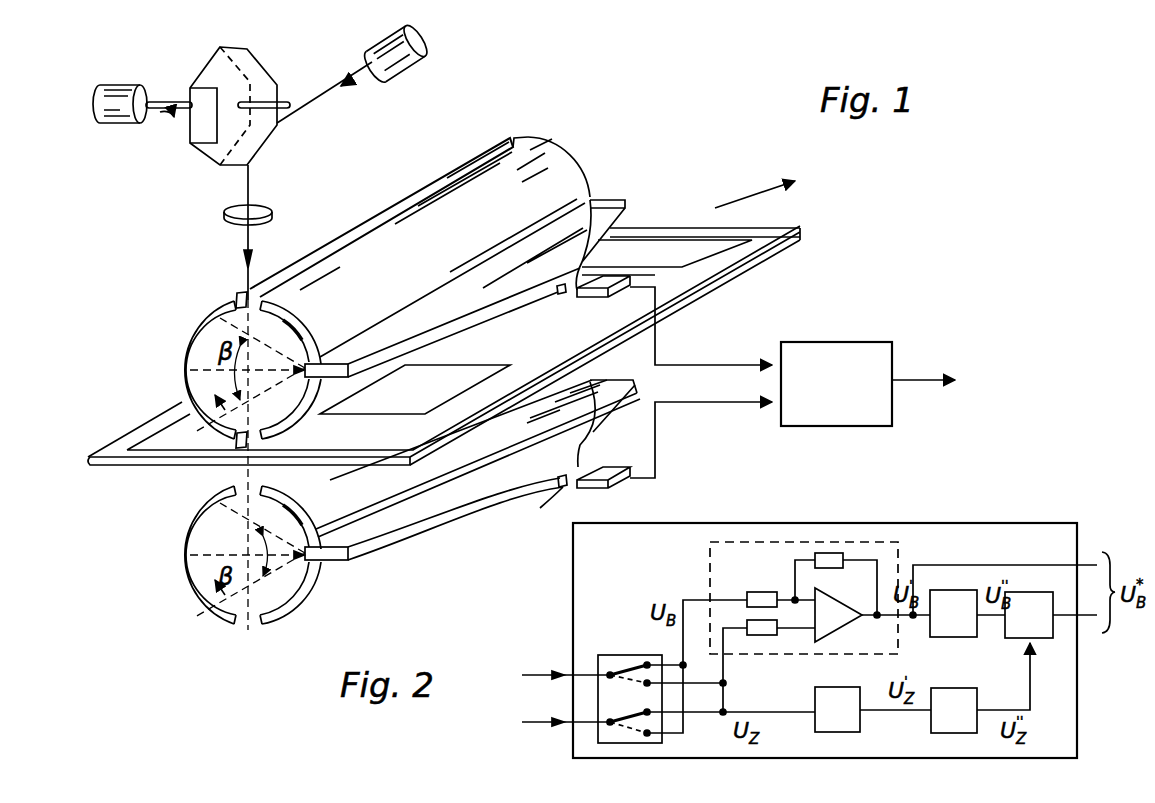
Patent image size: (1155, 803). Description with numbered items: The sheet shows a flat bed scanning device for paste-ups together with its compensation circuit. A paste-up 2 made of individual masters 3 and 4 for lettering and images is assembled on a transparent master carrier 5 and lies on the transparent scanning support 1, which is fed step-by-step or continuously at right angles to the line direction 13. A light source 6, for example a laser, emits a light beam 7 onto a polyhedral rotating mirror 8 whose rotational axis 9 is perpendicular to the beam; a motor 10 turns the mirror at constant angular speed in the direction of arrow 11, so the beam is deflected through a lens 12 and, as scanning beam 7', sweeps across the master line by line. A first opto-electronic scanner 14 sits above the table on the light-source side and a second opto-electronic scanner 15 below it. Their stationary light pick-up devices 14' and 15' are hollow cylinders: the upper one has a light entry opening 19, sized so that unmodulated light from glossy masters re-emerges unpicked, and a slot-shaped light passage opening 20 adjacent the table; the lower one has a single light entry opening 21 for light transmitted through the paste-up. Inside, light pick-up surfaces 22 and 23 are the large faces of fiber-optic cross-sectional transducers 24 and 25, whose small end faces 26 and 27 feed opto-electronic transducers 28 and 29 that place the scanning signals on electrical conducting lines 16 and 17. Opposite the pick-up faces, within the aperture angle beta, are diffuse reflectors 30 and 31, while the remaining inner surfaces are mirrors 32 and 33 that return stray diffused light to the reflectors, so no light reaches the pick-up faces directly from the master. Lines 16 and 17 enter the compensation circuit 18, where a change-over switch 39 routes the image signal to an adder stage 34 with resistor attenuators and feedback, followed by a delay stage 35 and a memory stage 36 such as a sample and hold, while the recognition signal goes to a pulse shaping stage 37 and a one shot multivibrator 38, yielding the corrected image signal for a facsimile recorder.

In FIG. 1, the scanning support 1 is at (108, 463).
In FIG. 1, the paste-up 2 is at (715, 255).
In FIG. 1, the individual master 3 is at (372, 412).
In FIG. 1, the individual master 4 is at (690, 262).
In FIG. 1, the transparent master carrier 5 is at (160, 445).
In FIG. 1, the light source 6 is at (408, 76).
In FIG. 1, the light beam 7 is at (324, 103).
In FIG. 1, the scanning beam 7' is at (224, 232).
In FIG. 1, the polyhedral rotating mirror 8 is at (250, 60).
In FIG. 1, the rotational axis 9 is at (284, 100).
In FIG. 1, the motor 10 is at (122, 122).
In FIG. 1, the arrow 11 is at (166, 98).
In FIG. 1, the lens 12 is at (266, 206).
In FIG. 1, the line direction 13 is at (740, 205).
In FIG. 1, the first opto-electronic scanner 14 is at (325, 383).
In FIG. 1, the upper light pick-up device 14' is at (175, 307).
In FIG. 1, the second opto-electronic scanner 15 is at (202, 561).
In FIG. 1, the lower light pick-up device 15' is at (179, 624).
In FIG. 1, the electrical conducting line 16 is at (710, 363).
In FIG. 2, the electrical conducting line 16 is at (535, 672).
In FIG. 1, the electrical conducting line 17 is at (712, 402).
In FIG. 2, the electrical conducting line 17 is at (538, 722).
In FIG. 1, the compensation circuit 18 is at (830, 342).
In FIG. 2, the compensation circuit 18 is at (965, 525).
In FIG. 1, the light entry opening 19 is at (234, 292).
In FIG. 1, the light passage opening 20 is at (235, 450).
In FIG. 1, the light entry opening 21 is at (230, 520).
In FIG. 1, the light pick-up surface 22 is at (288, 352).
In FIG. 1, the light pick-up surface 23 is at (288, 542).
In FIG. 1, the optical cross-sectional transducer 24 is at (612, 205).
In FIG. 1, the optical cross-sectional transducer 25 is at (590, 436).
In FIG. 1, the end face 26 is at (585, 300).
In FIG. 1, the end face 27 is at (553, 506).
In FIG. 1, the opto-electronic transducer 28 is at (668, 250).
In FIG. 1, the opto-electronic transducer 29 is at (595, 490).
In FIG. 1, the diffuse reflector 30 is at (184, 352).
In FIG. 1, the diffuse reflector 31 is at (184, 556).
In FIG. 1, the mirror 32 is at (322, 345).
In FIG. 1, the mirror 33 is at (322, 535).
In FIG. 2, the adder stage 34 is at (710, 580).
In FIG. 2, the delay stage 35 is at (950, 637).
In FIG. 2, the memory stage 36 is at (1020, 638).
In FIG. 2, the pulse shaping stage 37 is at (820, 697).
In FIG. 2, the one shot multivibrator 38 is at (931, 728).
In FIG. 2, the change-over switch 39 is at (613, 655).